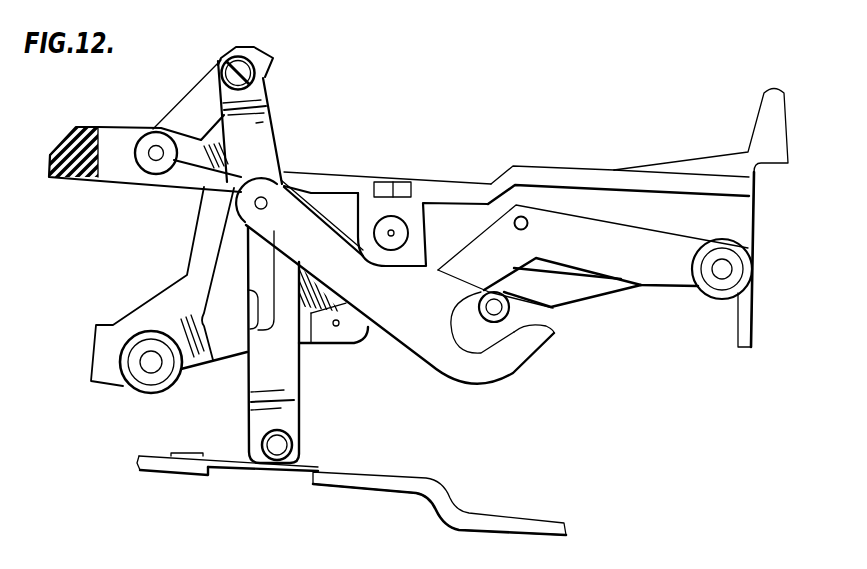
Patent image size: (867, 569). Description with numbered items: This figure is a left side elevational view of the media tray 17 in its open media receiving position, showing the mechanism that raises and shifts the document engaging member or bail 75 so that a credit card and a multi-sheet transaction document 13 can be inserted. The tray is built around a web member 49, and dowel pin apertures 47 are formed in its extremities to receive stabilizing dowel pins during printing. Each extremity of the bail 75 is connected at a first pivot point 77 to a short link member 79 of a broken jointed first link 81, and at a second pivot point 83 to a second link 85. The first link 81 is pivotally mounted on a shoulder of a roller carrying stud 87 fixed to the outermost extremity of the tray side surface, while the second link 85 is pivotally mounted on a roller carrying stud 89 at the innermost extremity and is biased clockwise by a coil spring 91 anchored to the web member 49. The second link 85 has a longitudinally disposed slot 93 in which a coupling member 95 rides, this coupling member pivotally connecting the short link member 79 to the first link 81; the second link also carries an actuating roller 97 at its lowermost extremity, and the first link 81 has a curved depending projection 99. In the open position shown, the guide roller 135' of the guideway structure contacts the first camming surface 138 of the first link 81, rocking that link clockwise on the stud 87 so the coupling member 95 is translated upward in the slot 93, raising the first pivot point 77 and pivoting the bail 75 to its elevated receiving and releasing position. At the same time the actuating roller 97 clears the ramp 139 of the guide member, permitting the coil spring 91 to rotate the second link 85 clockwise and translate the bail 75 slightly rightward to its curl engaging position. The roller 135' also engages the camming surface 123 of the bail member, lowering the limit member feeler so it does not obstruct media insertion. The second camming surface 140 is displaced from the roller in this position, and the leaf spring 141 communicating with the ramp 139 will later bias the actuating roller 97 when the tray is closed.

The multi-sheet transaction document 13 is at (413, 179).
The media tray 17 is at (512, 116).
The dowel pin apertures 47 is at (385, 227).
The web member 49 is at (510, 164).
The document engaging member or bail 75 is at (190, 93).
The first pivot point 77 is at (226, 58).
The short link member 79 is at (262, 132).
The broken jointed first link 81 is at (413, 334).
The second pivot point 83 is at (154, 145).
The second link 85 is at (283, 372).
The roller carrying stud 87 is at (720, 269).
The roller carrying stud 89 is at (151, 362).
The coil spring 91 is at (313, 337).
The longitudinally disposed slot 93 is at (246, 352).
The coupling member 95 is at (263, 196).
The actuating roller 97 is at (293, 440).
The curved depending projection 99 is at (514, 354).
The camming surface 123 is at (603, 294).
The roller 135' is at (588, 298).
The first camming surface 138 is at (468, 310).
The ramp 139 is at (445, 494).
The second camming surface 140 is at (548, 335).
The leaf spring 141 is at (233, 470).